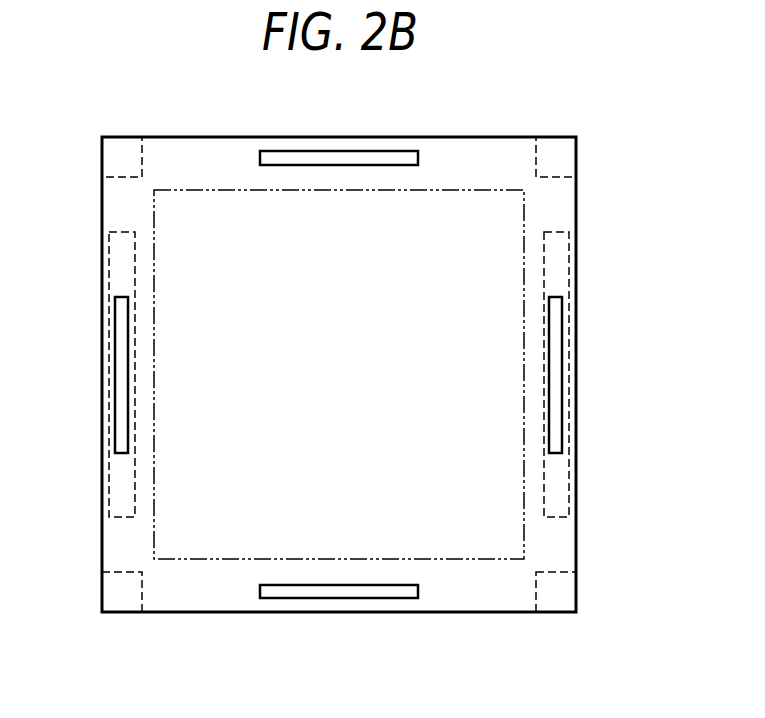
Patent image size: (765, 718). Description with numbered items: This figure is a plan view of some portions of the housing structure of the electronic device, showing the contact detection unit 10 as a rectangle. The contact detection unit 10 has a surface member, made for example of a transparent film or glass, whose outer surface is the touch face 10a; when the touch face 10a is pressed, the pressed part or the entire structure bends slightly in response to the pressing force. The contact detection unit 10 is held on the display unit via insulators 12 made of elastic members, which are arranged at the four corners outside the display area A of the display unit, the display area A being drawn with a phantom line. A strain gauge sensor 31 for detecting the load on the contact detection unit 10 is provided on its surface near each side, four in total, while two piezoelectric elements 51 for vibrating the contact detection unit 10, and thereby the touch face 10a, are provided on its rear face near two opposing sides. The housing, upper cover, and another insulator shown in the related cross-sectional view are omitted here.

The contact detection unit 10 is at (505, 163).
The touch face 10a is at (462, 512).
The insulators 12 is at (143, 163).
The strain gauge sensor 31 is at (378, 158).
The piezoelectric elements 51 is at (110, 272).
The display area A is at (152, 212).